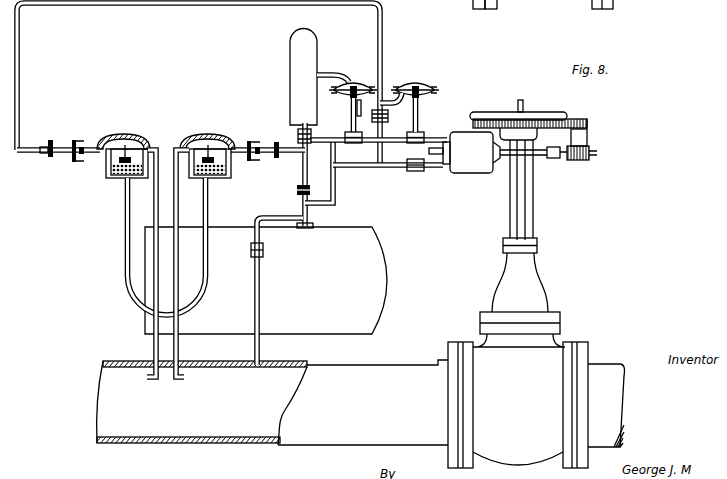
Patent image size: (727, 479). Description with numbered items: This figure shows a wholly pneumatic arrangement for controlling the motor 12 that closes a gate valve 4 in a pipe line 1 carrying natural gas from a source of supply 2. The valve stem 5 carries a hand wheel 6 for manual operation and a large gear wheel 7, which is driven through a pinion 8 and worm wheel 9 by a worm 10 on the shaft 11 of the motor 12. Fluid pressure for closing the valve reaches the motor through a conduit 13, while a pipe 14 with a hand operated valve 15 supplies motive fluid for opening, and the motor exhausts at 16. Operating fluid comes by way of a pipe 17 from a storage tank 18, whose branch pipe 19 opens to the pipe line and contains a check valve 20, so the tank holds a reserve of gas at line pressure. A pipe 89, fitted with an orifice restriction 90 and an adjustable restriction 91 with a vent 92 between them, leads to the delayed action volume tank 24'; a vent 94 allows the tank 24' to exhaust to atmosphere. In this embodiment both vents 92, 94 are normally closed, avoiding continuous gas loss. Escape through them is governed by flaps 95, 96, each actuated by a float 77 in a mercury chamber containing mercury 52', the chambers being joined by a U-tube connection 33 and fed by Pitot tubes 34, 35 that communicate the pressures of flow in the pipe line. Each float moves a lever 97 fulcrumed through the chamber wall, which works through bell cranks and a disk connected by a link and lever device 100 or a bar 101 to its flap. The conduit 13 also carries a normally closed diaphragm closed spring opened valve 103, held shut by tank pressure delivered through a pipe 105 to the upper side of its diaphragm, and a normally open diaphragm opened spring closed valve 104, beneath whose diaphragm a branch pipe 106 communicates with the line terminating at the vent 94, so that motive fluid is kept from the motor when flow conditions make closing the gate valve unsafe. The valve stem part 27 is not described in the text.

The pipe line 1 is at (255, 445).
The source of supply 2 is at (543, 5).
The gate valve 4 is at (556, 348).
The valve stem 5 is at (524, 108).
The hand wheel 6 is at (555, 124).
The gear wheel 7 is at (548, 122).
The pinion 8 is at (588, 123).
The worm wheel 9 is at (578, 156).
The worm 10 is at (588, 149).
The motor shaft 11 is at (540, 157).
The motor 12 is at (486, 165).
The conduit 13 is at (438, 138).
The pipe 14 is at (439, 166).
The hand operated valve 15 is at (410, 171).
The exhaust 16 is at (434, 155).
The pipe 17 is at (313, 205).
The storage tank 18 is at (385, 297).
The branch pipe 19 is at (261, 297).
The check valve 20 is at (264, 252).
The delayed action volume tank 24' is at (299, 77).
The valve lever 27 is at (361, 112).
The U-tube connection 33 is at (124, 297).
The Pitot tube 34 is at (153, 379).
The Pitot tube 35 is at (181, 379).
The liquid in float chamber 52' is at (166, 181).
The float 77 is at (128, 157).
The pipe 89 is at (301, 160).
The orifice restriction 90 is at (296, 191).
The adjustable restriction 91 is at (311, 136).
The vent 92 is at (274, 154).
The atmospheric vent 94 is at (47, 146).
The flap 95 is at (272, 148).
The flap 96 is at (53, 143).
The lever 97 is at (84, 148).
The link and lever device 100 is at (408, 137).
The bar 101 is at (46, 153).
The diaphragm closed spring opened valve 103 is at (351, 108).
The diaphragm opened spring closed valve 104 is at (422, 97).
The pipe 105 is at (351, 80).
The branch pipe 106 is at (384, 116).